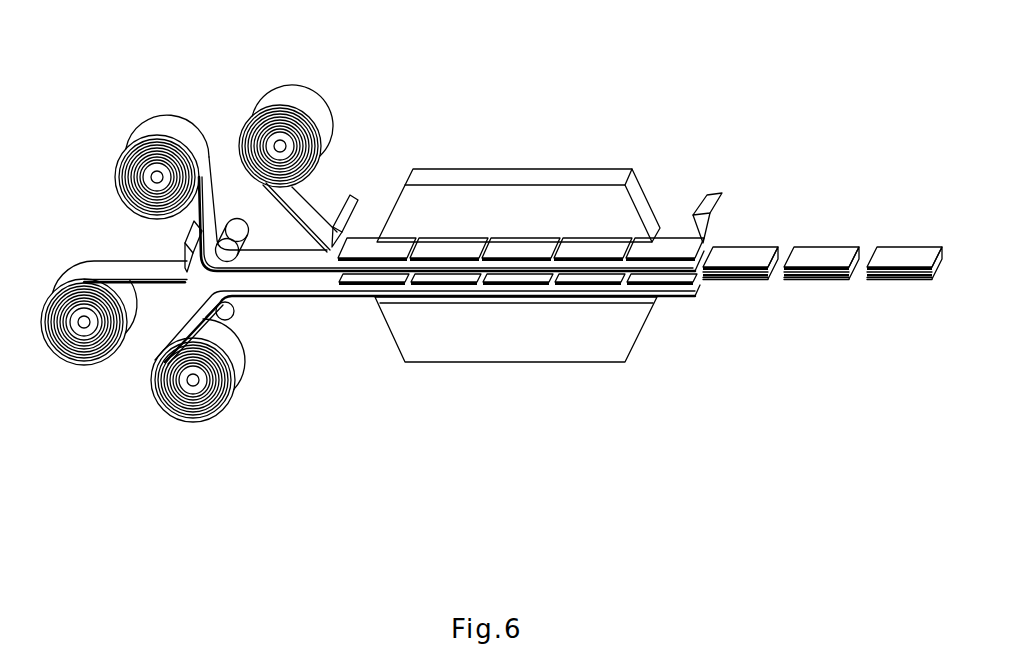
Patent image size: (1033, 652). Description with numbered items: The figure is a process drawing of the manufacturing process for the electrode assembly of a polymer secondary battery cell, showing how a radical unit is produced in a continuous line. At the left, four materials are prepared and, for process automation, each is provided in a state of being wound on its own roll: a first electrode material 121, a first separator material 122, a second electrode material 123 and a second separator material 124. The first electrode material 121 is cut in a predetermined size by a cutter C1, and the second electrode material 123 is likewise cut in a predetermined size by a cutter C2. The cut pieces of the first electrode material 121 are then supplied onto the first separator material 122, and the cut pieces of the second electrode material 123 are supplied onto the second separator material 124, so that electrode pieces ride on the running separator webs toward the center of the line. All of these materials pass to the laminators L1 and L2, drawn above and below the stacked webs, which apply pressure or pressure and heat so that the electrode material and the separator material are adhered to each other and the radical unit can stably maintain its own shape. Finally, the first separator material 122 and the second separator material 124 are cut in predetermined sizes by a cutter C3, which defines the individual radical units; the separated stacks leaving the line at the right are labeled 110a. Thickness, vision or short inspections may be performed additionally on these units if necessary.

The first electrode material 121 is at (293, 93).
The first separator material 122 is at (167, 123).
The second electrode material 123 is at (82, 268).
The second separator material 124 is at (240, 363).
The cutter C1 is at (353, 207).
The cutter C2 is at (185, 253).
The cutter C3 is at (708, 200).
The laminator L1 is at (518, 178).
The laminator L2 is at (507, 350).
The unit cell stack 110a is at (900, 280).